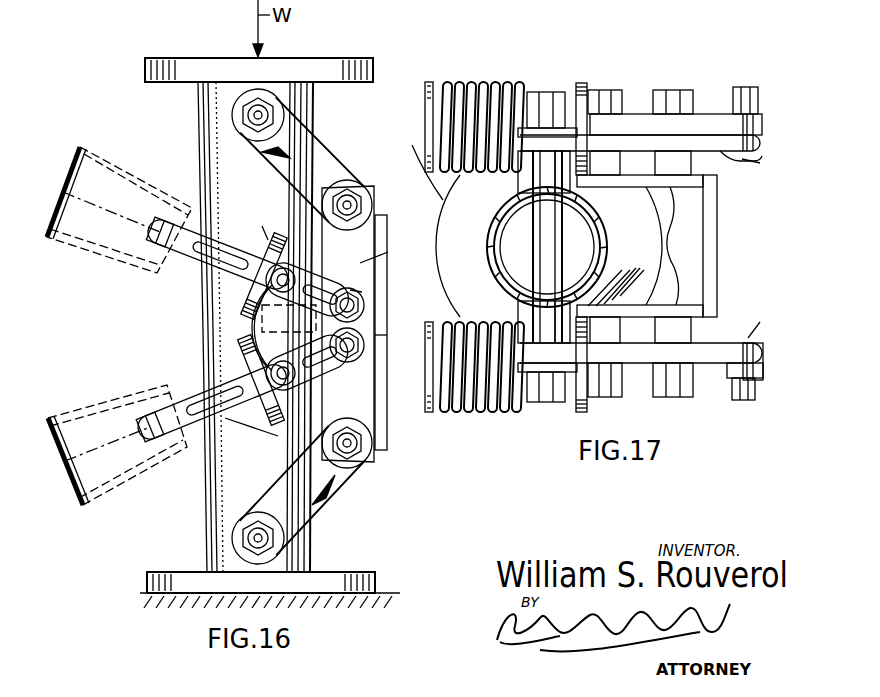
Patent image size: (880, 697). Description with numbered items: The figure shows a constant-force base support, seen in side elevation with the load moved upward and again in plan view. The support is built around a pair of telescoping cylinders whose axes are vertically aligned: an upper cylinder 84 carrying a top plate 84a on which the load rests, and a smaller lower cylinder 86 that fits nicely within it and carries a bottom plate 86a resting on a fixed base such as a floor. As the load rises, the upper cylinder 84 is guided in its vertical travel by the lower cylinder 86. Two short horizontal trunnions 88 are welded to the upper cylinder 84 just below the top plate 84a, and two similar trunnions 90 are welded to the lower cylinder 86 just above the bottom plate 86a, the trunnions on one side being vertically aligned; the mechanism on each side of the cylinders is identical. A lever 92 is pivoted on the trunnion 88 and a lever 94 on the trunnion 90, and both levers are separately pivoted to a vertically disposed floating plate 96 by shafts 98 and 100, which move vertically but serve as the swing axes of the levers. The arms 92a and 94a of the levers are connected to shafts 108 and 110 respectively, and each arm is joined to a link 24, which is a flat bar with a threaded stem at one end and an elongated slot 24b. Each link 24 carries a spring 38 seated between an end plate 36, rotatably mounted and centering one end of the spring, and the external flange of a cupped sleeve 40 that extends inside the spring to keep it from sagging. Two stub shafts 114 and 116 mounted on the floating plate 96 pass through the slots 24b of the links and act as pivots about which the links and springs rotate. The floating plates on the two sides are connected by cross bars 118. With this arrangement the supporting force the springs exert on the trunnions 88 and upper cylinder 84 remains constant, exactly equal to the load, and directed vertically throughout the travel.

In FIG. 16, the link 24 is at (284, 328).
In FIG. 17, the link 24 is at (712, 113).
In FIG. 16, the elongated slot 24b is at (196, 288).
In FIG. 16, the end plate 36 is at (274, 329).
In FIG. 17, the end plate 36 is at (582, 83).
In FIG. 16, the spring 38 is at (122, 262).
In FIG. 17, the spring 38 is at (492, 84).
In FIG. 16, the cupped sleeve 40 is at (72, 240).
In FIG. 16, the upper cylinder 84 is at (212, 101).
In FIG. 17, the upper cylinder 84 is at (600, 232).
In FIG. 16, the top plate 84a is at (186, 46).
In FIG. 16, the lower cylinder 86 is at (216, 498).
In FIG. 17, the lower cylinder 86 is at (597, 247).
In FIG. 16, the bottom plate 86a is at (172, 573).
In FIG. 17, the bottom plate 86a is at (412, 164).
In FIG. 16, the trunnion 88 is at (254, 122).
In FIG. 17, the trunnion 88 is at (543, 92).
In FIG. 16, the trunnion 90 is at (258, 541).
In FIG. 16, the lever 92 is at (362, 180).
In FIG. 17, the lever 92 is at (714, 158).
In FIG. 16, the arm 92a is at (387, 251).
In FIG. 17, the arm 92a is at (763, 247).
In FIG. 16, the lever 94 is at (366, 462).
In FIG. 16, the arm 94a is at (362, 362).
In FIG. 16, the floating plate 96 is at (366, 308).
In FIG. 17, the floating plate 96 is at (680, 246).
In FIG. 16, the shaft 98 is at (360, 200).
In FIG. 17, the shaft 98 is at (672, 90).
In FIG. 16, the shaft 100 is at (372, 443).
In FIG. 16, the shaft 108 is at (358, 292).
In FIG. 17, the shaft 108 is at (745, 87).
In FIG. 16, the shaft 110 is at (366, 335).
In FIG. 16, the stub shaft 114 is at (264, 226).
In FIG. 17, the stub shaft 114 is at (612, 84).
In FIG. 16, the stub shaft 116 is at (266, 430).
In FIG. 16, the cross bar 118 is at (382, 228).
In FIG. 17, the cross bar 118 is at (718, 225).